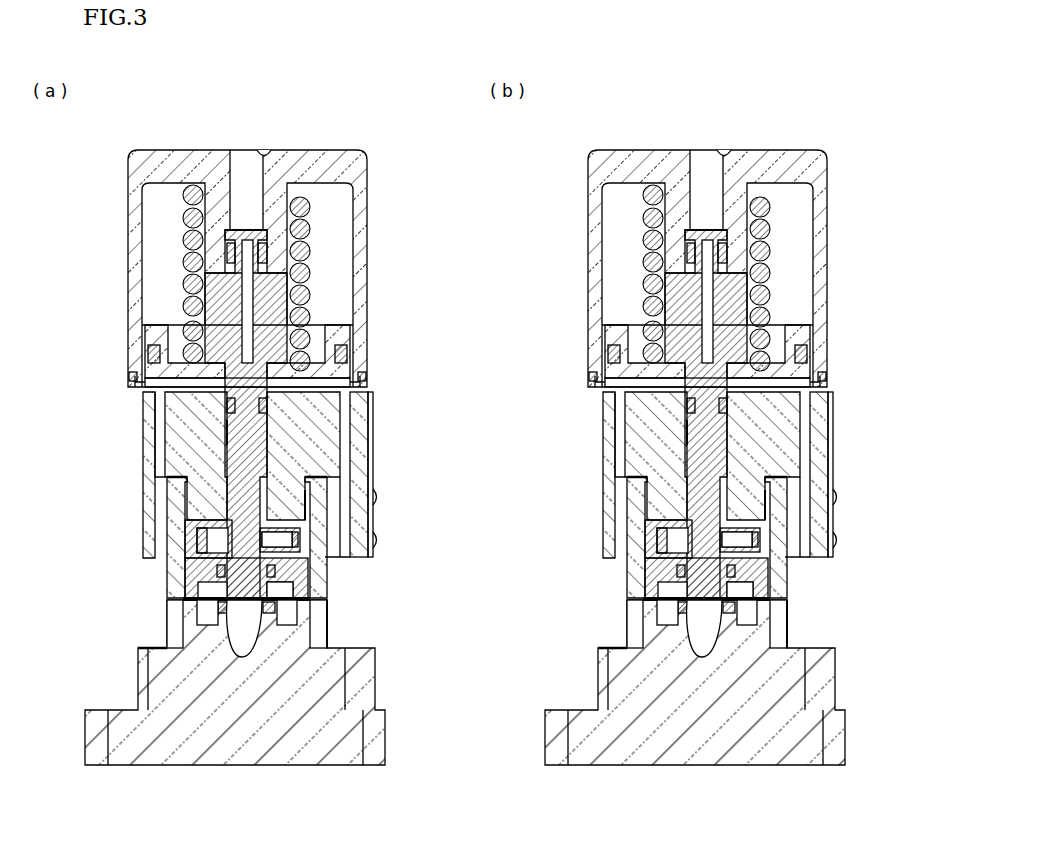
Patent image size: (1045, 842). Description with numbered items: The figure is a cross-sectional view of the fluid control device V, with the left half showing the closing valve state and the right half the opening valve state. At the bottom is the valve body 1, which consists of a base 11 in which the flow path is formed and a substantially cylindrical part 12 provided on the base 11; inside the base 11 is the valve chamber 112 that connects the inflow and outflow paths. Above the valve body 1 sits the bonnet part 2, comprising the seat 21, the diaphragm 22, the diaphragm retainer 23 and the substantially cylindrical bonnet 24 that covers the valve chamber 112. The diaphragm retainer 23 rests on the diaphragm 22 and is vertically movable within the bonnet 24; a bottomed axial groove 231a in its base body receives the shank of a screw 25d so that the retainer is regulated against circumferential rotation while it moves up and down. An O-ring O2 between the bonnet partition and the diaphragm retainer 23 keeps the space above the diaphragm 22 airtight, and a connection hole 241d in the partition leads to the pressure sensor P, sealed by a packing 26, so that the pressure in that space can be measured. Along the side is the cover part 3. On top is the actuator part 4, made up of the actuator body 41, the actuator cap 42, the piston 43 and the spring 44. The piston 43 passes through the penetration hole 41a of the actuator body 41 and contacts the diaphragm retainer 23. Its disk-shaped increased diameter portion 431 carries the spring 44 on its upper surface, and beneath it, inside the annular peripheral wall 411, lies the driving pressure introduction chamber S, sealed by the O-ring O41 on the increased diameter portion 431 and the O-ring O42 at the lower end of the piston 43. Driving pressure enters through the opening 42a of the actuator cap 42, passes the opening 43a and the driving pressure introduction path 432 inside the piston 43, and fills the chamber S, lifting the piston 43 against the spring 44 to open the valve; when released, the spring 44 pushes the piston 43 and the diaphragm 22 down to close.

The valve body 1 is at (511, 685).
The base 11 is at (387, 750).
The cylindrical part 12 is at (327, 625).
The valve chamber 112 is at (140, 650).
The bonnet part 2 is at (494, 551).
The seat 21 is at (200, 605).
The diaphragm 22 is at (190, 590).
The diaphragm retainer 23 is at (187, 478).
The groove 231a is at (306, 505).
The bonnet 24 is at (200, 540).
The connection hole 241d is at (300, 580).
The screw 25d is at (285, 540).
The packing 26 is at (290, 565).
The cover part 3 is at (384, 482).
The actuator part 4 is at (481, 337).
The actuator body 41 is at (488, 475).
The penetration hole 41a is at (227, 433).
The peripheral wall 411 is at (350, 327).
The actuator cap 42 is at (367, 215).
The opening 42a is at (268, 152).
The piston 43 is at (313, 278).
The opening 43a is at (248, 228).
The increased diameter portion 431 is at (350, 342).
The driving pressure introduction path 432 is at (247, 307).
The spring 44 is at (312, 300).
The O-ring O2 is at (215, 568).
The O-ring O41 is at (350, 360).
The O-ring O42 is at (267, 403).
The pressure sensor P is at (295, 548).
The driving pressure introduction chamber S is at (139, 374).
The fluid control device V is at (495, 422).